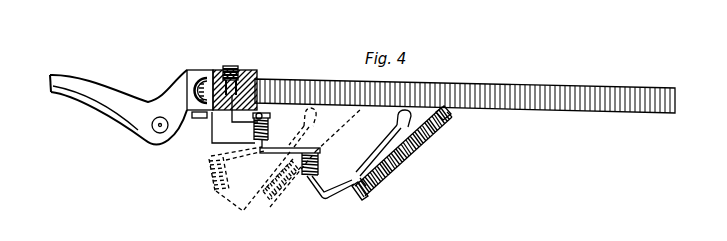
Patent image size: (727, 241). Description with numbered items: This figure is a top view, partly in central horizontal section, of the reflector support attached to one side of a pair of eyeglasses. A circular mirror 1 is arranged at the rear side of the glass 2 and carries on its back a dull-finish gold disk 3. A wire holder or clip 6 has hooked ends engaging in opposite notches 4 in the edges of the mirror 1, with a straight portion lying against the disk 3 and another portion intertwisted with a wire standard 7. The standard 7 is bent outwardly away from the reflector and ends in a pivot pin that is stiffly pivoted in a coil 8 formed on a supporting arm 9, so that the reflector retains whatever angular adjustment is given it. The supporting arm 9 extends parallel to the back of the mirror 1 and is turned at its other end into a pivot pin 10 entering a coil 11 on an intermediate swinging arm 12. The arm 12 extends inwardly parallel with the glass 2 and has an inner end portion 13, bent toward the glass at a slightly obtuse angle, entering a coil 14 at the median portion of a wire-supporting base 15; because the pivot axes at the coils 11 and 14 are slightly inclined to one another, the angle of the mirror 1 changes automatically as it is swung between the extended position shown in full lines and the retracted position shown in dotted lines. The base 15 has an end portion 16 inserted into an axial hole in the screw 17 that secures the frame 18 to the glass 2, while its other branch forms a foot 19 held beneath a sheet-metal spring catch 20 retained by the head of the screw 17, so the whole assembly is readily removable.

The mirror 1 is at (398, 165).
The glass 2 is at (592, 113).
The gold plate or disk 3 is at (405, 143).
The notch 4 is at (353, 216).
The holder or clip 6 is at (428, 111).
The wire standard 7 is at (390, 130).
The coil 8 is at (396, 113).
The supporting arm 9 is at (360, 172).
The pivot pin 10 is at (317, 150).
The coil 11 is at (318, 168).
The intermediate swinging arm 12 is at (268, 160).
The inner end portion 13 is at (262, 117).
The coil 14 is at (269, 133).
The wire-supporting base 15 is at (235, 119).
The end portion 16 is at (215, 82).
The screw 17 is at (233, 68).
The frame 18 is at (97, 81).
The foot 19 is at (183, 117).
The spring catch 20 is at (203, 120).